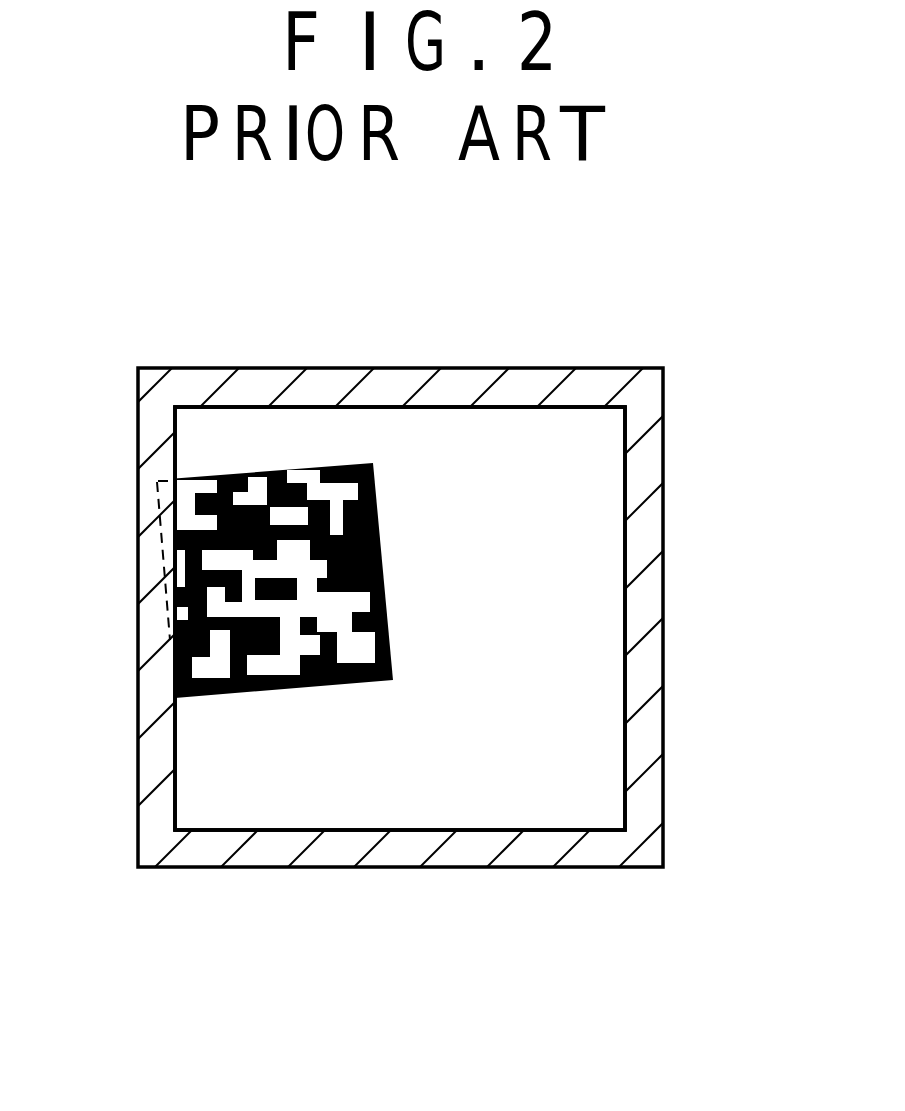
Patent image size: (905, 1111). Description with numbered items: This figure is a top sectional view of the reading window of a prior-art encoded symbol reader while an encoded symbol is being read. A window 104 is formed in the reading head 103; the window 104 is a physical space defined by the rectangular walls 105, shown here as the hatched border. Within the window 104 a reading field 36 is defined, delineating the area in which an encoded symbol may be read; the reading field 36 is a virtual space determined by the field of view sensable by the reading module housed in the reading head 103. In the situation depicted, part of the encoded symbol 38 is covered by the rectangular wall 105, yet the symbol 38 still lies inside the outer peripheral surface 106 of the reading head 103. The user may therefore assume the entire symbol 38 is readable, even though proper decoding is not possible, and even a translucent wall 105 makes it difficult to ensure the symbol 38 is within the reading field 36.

The reading head 103 is at (373, 868).
The wall 105 is at (326, 384).
The window 104 is at (563, 568).
The reading field 36 is at (565, 788).
The outer peripheral surface 106 is at (138, 500).
The encoded symbol 38 is at (172, 640).